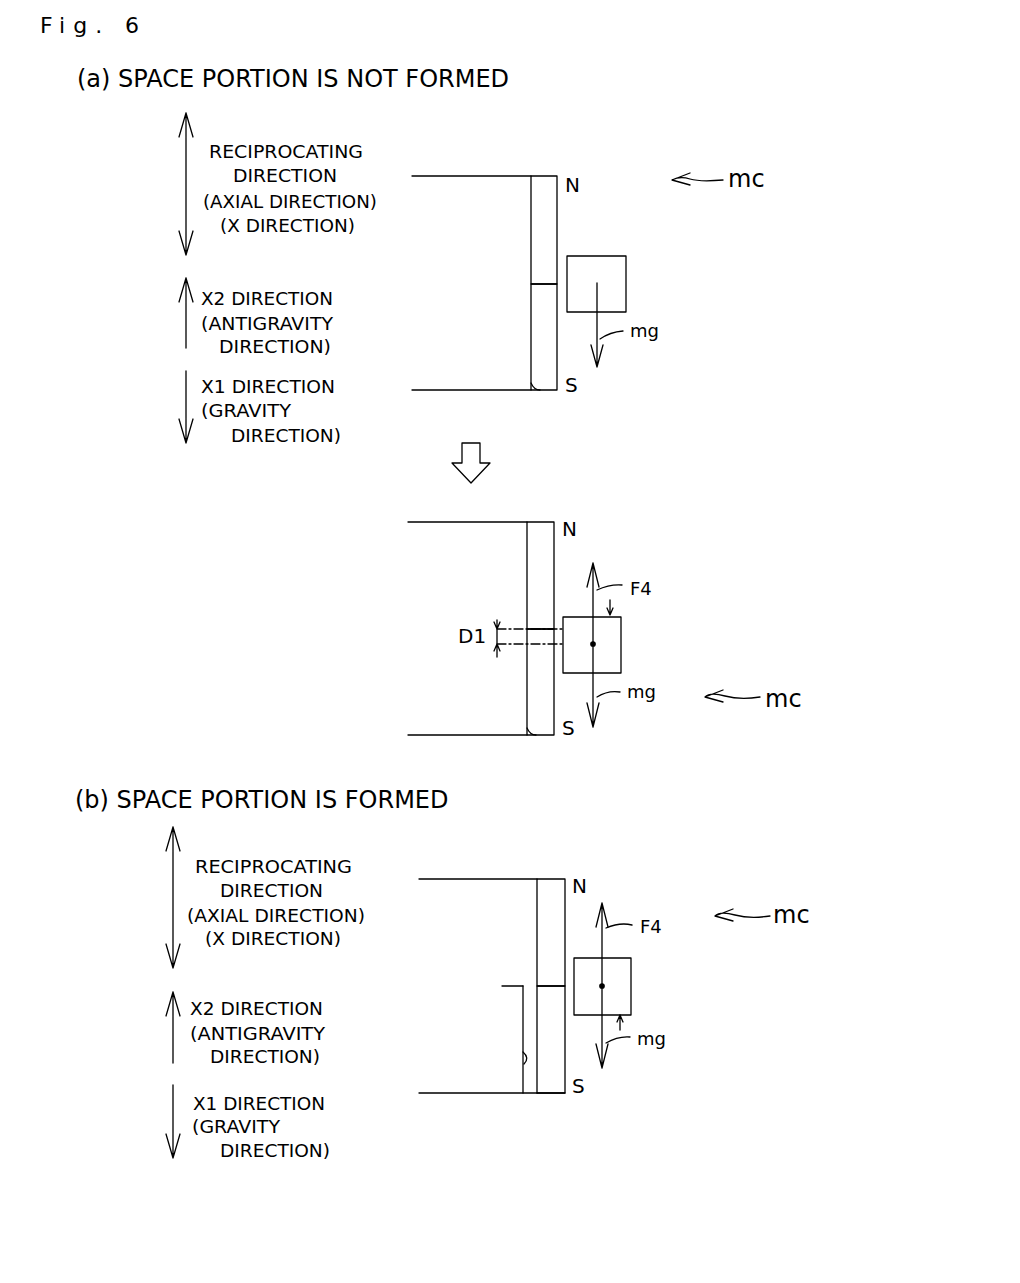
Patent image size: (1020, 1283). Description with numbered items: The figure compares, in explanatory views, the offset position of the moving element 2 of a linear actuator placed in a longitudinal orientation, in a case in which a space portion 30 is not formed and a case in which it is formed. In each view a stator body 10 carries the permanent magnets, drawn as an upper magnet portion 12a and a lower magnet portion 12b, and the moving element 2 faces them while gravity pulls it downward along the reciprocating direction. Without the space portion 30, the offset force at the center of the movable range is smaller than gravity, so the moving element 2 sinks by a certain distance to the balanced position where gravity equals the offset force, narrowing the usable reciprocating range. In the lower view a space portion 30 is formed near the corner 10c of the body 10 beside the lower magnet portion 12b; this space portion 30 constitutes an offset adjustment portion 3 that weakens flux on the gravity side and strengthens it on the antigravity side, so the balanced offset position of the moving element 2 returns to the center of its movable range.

The housing 10 is at (467, 295).
The corner portion of housing 10c is at (536, 393).
The first magnet portion (N pole side) 12a is at (540, 216).
The second magnet portion (S pole side) 12b is at (541, 346).
The moving element 2 is at (617, 272).
The space portion 30 is at (530, 1082).
The offset adjustment portion 3 is at (555, 1120).